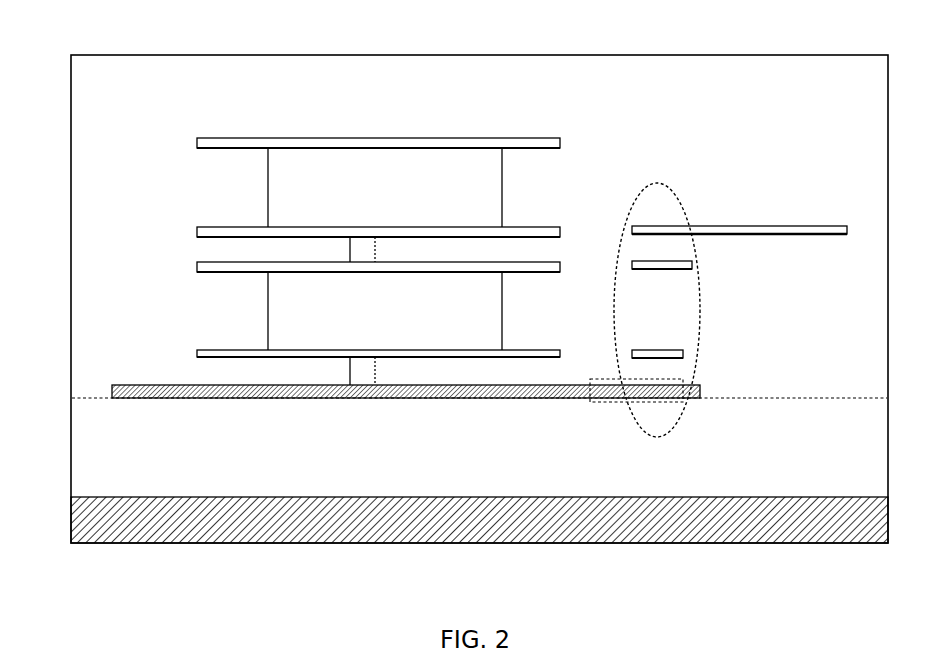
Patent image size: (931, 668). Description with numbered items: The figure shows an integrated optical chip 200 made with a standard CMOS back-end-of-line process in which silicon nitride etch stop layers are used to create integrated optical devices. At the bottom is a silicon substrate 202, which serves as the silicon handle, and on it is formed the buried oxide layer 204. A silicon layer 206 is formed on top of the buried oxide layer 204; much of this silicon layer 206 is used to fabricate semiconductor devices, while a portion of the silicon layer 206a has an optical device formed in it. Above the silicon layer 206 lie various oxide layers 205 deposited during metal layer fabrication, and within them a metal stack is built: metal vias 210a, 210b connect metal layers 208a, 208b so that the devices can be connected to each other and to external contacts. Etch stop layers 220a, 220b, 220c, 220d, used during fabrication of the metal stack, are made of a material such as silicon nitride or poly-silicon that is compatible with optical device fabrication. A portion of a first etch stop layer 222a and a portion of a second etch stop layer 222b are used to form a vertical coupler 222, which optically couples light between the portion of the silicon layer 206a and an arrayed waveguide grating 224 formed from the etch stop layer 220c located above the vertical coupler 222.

The integrated optical chip 200 is at (91, 54).
The silicon substrate 202 is at (71, 521).
The buried oxide layer 204 is at (73, 474).
The oxide layers 205 is at (73, 299).
The silicon layer 206 is at (138, 397).
The portion of the silicon layer 206a is at (617, 403).
The metal layer 208a is at (268, 310).
The metal layer 208b is at (268, 187).
The metal via 210a is at (352, 372).
The metal via 210b is at (352, 248).
The etch stop layer 220a is at (197, 352).
The etch stop layer 220b is at (197, 267).
The etch stop layer 220c is at (197, 232).
The etch stop layer 220d is at (197, 143).
The vertical coupler 222 is at (656, 183).
The portion of first etch stop layer 222a is at (680, 355).
The portion of second etch stop layer 222b is at (680, 266).
The arrayed waveguide grating 224 is at (727, 229).